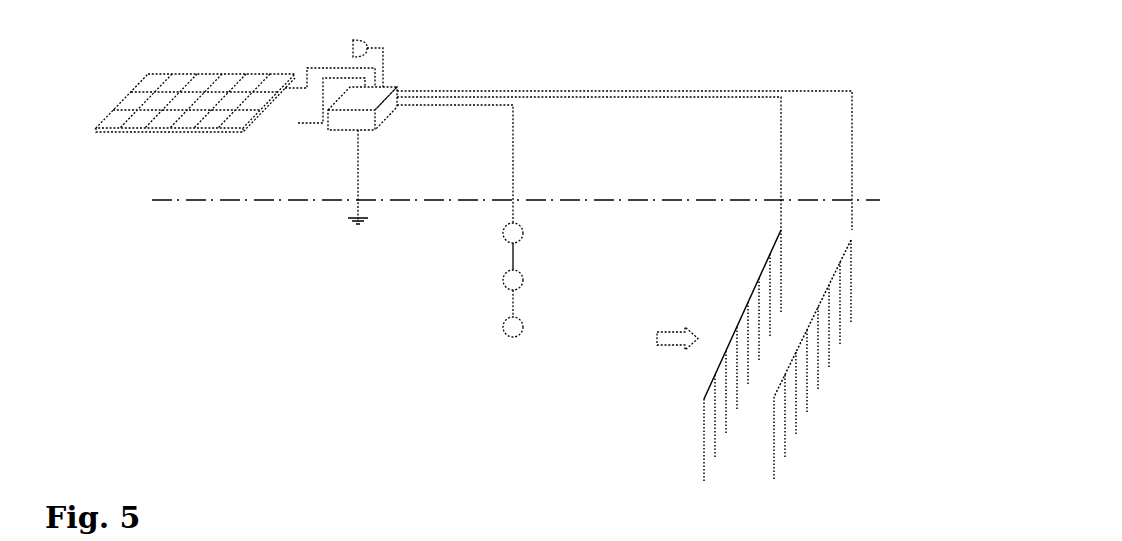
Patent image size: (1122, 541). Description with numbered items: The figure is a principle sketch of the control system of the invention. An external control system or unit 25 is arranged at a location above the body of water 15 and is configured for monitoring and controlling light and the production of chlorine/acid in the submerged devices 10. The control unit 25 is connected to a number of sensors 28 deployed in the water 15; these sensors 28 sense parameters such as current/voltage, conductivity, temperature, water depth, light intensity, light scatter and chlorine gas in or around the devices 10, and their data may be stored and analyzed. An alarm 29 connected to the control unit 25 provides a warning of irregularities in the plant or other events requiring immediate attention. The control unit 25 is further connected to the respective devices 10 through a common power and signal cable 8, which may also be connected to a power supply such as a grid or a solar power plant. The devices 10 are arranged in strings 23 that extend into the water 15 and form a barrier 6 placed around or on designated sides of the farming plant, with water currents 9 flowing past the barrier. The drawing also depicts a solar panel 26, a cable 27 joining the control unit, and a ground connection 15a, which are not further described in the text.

The solar panel 26 is at (178, 93).
The cable 27 is at (298, 125).
The alarm 29 is at (353, 48).
The control system 25 is at (383, 92).
The ground connection 15a is at (343, 226).
The water 15 is at (630, 263).
The sensors 28 is at (505, 278).
The water currents 9 is at (677, 330).
The common power and signal cable 8 is at (771, 350).
The barrier 6 is at (690, 362).
The device 10 is at (820, 358).
The strings 23 is at (873, 295).